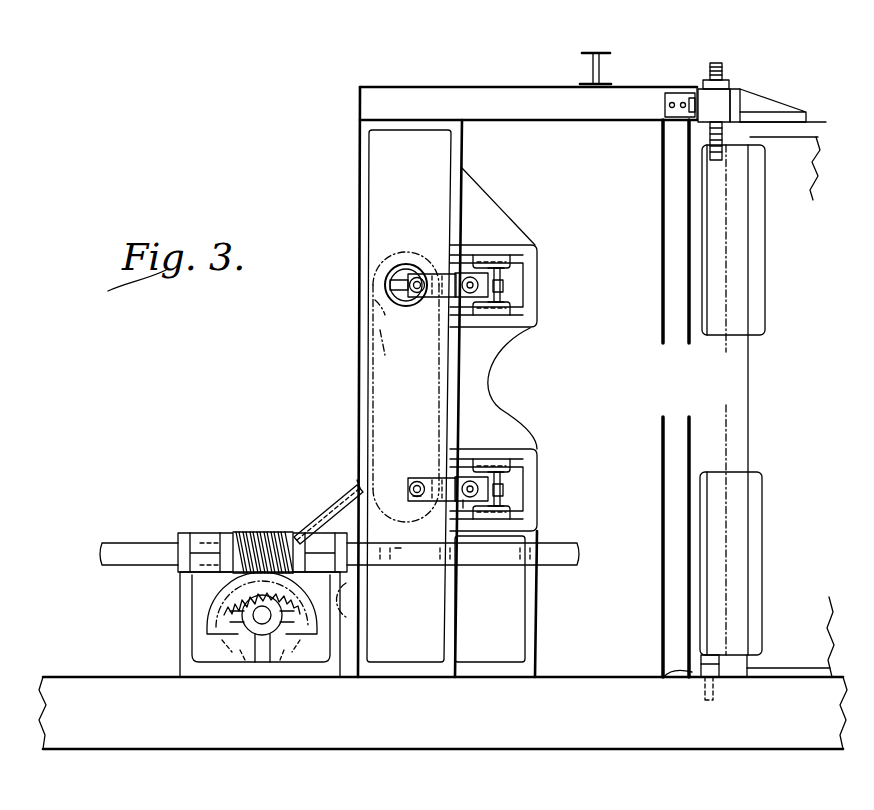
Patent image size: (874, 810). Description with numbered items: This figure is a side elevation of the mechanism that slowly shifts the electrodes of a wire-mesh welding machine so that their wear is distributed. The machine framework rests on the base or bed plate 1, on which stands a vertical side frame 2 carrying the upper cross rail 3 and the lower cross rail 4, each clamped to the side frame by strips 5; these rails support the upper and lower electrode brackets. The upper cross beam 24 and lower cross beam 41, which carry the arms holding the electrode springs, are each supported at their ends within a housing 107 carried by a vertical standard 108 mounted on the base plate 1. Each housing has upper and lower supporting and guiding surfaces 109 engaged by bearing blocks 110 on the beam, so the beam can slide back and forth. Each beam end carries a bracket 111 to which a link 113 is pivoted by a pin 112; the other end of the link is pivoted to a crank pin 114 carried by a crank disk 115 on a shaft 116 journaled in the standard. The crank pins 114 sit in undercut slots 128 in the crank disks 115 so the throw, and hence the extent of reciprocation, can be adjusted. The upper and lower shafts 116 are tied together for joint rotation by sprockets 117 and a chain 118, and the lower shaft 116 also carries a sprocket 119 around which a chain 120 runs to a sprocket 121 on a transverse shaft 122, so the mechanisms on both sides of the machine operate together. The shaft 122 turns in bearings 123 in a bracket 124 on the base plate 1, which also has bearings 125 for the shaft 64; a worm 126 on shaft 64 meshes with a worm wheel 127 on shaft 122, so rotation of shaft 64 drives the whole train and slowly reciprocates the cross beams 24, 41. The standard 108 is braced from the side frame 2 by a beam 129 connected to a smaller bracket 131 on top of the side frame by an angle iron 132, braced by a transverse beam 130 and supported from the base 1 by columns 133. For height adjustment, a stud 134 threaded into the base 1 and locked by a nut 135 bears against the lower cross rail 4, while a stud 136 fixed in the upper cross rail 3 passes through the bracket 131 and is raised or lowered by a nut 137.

The base or bed plate 1 is at (262, 736).
The vertical side frame 2 is at (818, 151).
The upper cross rail 3 is at (735, 248).
The lower cross rail 4 is at (728, 578).
The strip 5 is at (755, 314).
The cross beam 24 is at (498, 276).
The cross beam 41 is at (500, 485).
The shaft 64 is at (143, 548).
The housing 107 is at (538, 292).
The vertical standard 108 is at (390, 352).
The supporting and guiding surface 109 is at (514, 253).
The bearing block 110 is at (487, 258).
The bracket 111 is at (478, 480).
The pin 112 is at (465, 502).
The link 113 is at (445, 277).
The crank pin 114 is at (418, 500).
The crank disk 115 is at (414, 298).
The shaft 116 is at (398, 550).
The sprocket 117 is at (374, 312).
The chain 118 is at (370, 392).
The sprocket 119 is at (358, 474).
The chain 120 is at (326, 498).
The sprocket 121 is at (362, 602).
The shaft 122 is at (270, 630).
The bearing 123 is at (253, 630).
The bracket 124 is at (188, 642).
The bearing 125 is at (207, 540).
The worm 126 is at (253, 533).
The worm wheel 127 is at (222, 603).
The undercut slot 128 is at (400, 263).
The beam 129 is at (519, 93).
The transverse beam 130 is at (601, 42).
The bracket 131 is at (766, 112).
The angle iron 132 is at (668, 110).
The column 133 is at (668, 160).
The stud 134 is at (722, 696).
The nut 135 is at (670, 677).
The stud 136 is at (710, 148).
The nut 137 is at (726, 85).